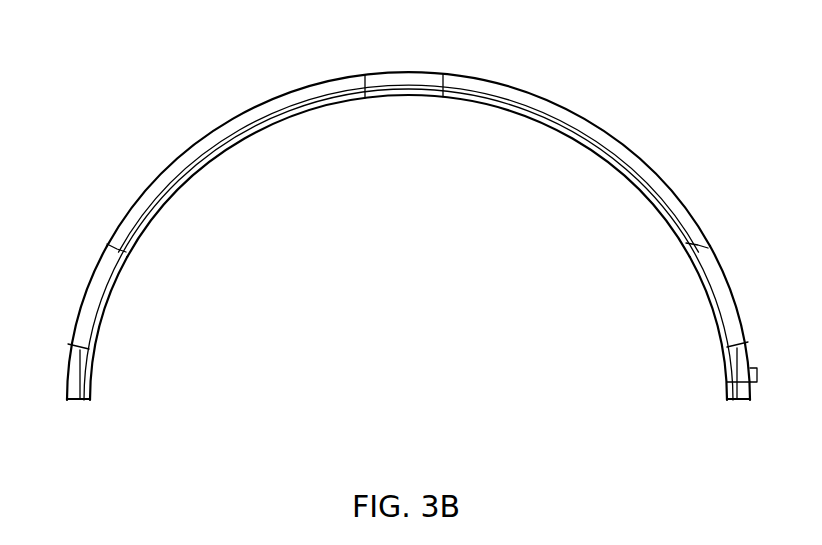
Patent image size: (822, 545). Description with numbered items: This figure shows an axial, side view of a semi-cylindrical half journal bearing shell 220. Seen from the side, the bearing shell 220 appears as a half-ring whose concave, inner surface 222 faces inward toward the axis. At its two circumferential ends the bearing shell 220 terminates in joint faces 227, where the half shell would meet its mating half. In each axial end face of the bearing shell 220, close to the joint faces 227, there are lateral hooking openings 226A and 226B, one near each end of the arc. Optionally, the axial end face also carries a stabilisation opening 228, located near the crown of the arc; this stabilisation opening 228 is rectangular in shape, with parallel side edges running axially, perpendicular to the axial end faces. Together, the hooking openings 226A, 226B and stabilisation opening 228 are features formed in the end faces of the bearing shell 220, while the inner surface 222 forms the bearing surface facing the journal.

The semi-cylindrical half journal bearing shell 220 is at (652, 68).
The concave inner surface 222 is at (560, 130).
The lateral hooking opening 226A is at (91, 293).
The lateral hooking opening 226B is at (713, 271).
The joint faces 227 is at (78, 399).
The stabilisation opening 228 is at (420, 78).